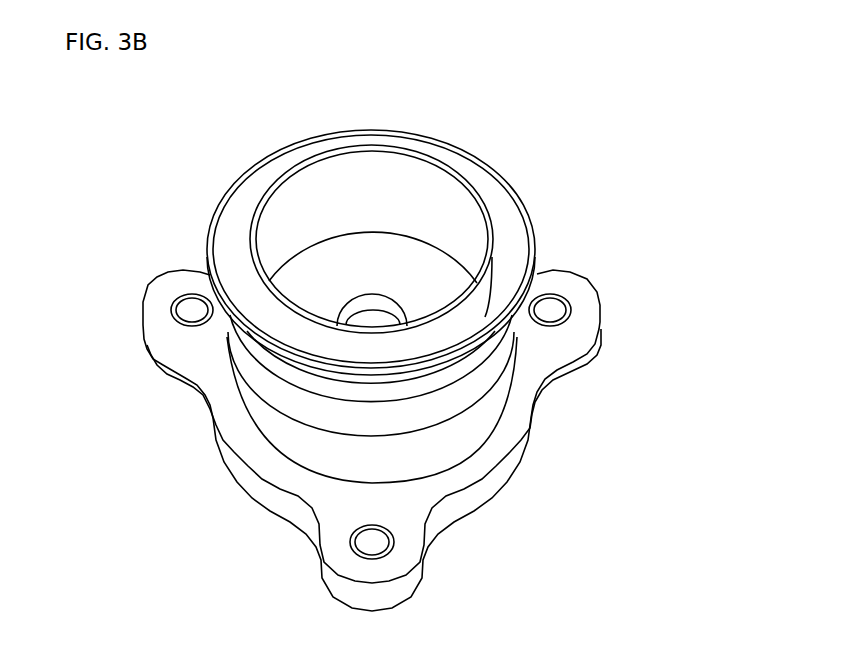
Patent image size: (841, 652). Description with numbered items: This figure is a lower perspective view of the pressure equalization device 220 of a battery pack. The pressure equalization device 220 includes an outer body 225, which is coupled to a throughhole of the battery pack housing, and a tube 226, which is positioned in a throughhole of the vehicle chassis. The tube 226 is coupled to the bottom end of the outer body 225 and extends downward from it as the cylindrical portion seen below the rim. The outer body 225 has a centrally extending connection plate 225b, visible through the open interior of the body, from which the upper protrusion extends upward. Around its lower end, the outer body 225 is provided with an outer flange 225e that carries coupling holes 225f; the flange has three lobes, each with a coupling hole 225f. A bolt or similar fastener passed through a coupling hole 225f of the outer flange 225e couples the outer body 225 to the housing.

The pressure equalization device 220 is at (540, 139).
The outer body 225 is at (293, 445).
The connection plate 225b is at (338, 265).
The outer flange 225e is at (594, 339).
The coupling hole 225f is at (553, 311).
The tube 226 is at (275, 388).